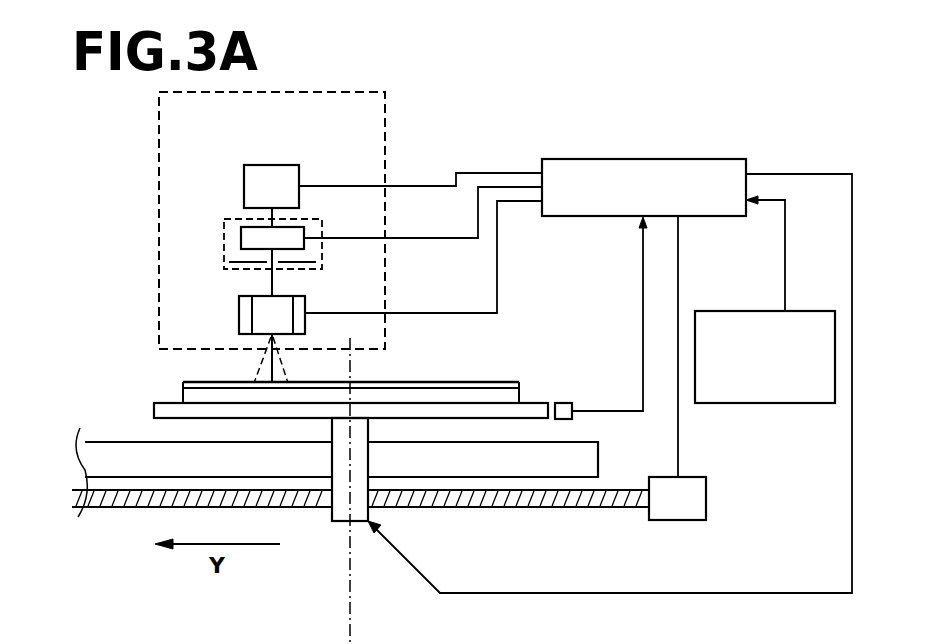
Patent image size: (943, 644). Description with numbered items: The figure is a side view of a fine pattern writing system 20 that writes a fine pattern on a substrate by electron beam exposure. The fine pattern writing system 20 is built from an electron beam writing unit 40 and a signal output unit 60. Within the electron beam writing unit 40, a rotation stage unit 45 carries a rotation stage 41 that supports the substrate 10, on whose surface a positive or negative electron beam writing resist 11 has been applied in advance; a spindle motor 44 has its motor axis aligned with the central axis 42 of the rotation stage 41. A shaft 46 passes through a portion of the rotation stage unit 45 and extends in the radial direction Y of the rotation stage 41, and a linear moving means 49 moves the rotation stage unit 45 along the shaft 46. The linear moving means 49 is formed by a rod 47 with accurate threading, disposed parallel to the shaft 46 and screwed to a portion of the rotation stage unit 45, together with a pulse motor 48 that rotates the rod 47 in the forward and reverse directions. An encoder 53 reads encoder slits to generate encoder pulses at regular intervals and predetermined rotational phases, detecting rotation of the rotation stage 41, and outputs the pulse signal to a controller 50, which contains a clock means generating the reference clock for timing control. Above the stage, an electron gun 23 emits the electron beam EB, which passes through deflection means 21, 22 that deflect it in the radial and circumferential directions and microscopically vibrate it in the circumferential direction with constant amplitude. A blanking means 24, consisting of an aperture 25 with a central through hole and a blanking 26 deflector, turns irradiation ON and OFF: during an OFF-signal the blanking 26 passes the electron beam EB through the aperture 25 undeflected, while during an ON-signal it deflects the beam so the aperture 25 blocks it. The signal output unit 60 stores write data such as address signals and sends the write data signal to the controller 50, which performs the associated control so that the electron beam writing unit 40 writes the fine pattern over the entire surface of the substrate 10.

The substrate 10 is at (460, 397).
The electron beam writing resist 11 is at (510, 383).
The fine pattern writing system 20 is at (788, 122).
The deflection means 21 is at (239, 311).
The deflection means 22 is at (292, 300).
The electron gun 23 is at (274, 165).
The blanking means 24 is at (324, 246).
The aperture 25 is at (236, 260).
The blanking 26 is at (241, 232).
The electron beam writing unit 40 is at (150, 220).
The rotation stage 41 is at (160, 410).
The central axis 42 is at (352, 375).
The spindle motor 44 is at (340, 431).
The rotation stage unit 45 is at (380, 429).
The shaft 46 is at (598, 455).
The rod 47 is at (545, 508).
The pulse motor 48 is at (690, 521).
The linear moving means 49 is at (722, 549).
The controller 50 is at (714, 159).
The encoder 53 is at (567, 401).
The signal output unit 60 is at (811, 309).
The electron beam EB is at (260, 372).